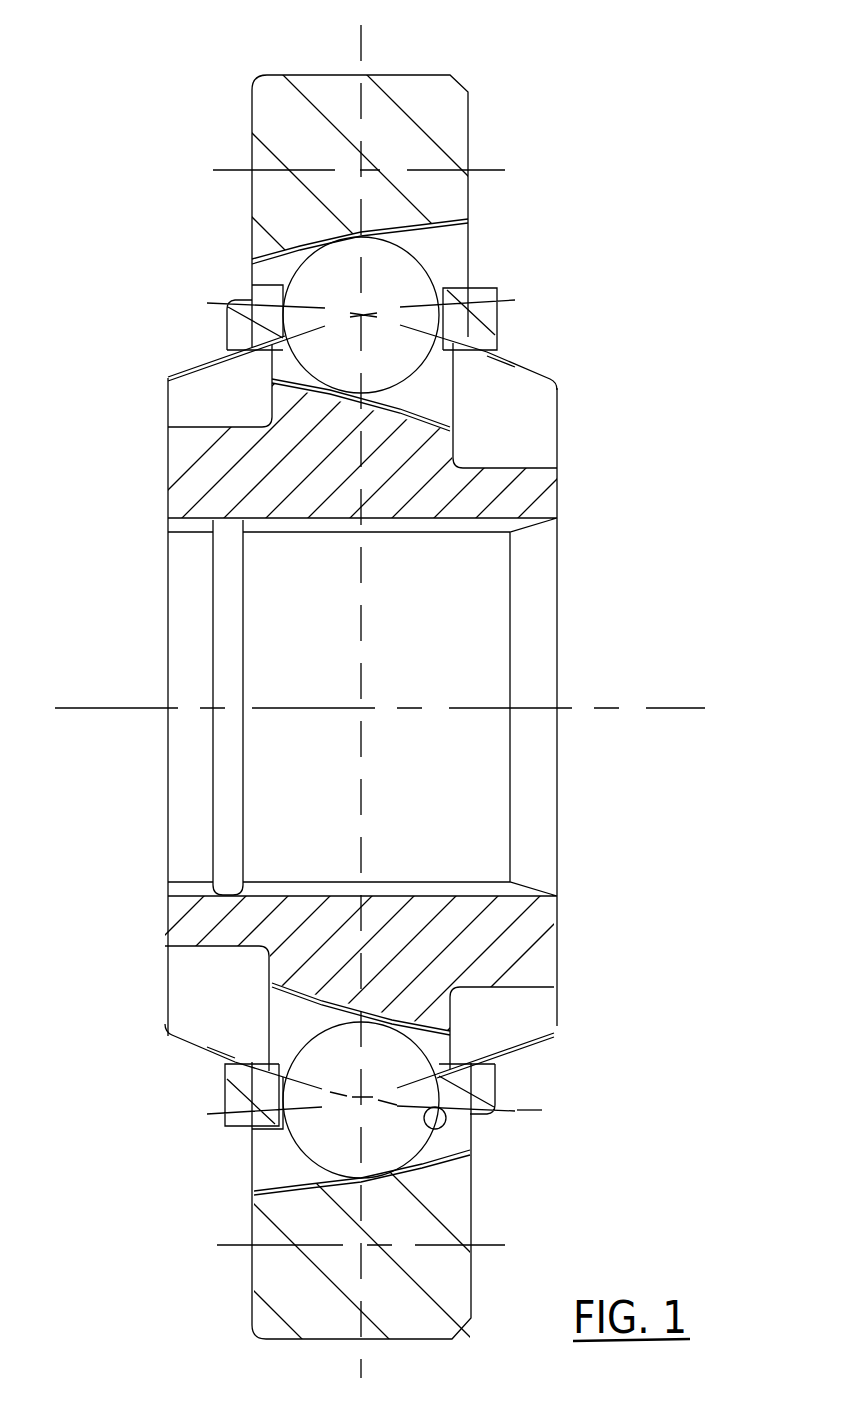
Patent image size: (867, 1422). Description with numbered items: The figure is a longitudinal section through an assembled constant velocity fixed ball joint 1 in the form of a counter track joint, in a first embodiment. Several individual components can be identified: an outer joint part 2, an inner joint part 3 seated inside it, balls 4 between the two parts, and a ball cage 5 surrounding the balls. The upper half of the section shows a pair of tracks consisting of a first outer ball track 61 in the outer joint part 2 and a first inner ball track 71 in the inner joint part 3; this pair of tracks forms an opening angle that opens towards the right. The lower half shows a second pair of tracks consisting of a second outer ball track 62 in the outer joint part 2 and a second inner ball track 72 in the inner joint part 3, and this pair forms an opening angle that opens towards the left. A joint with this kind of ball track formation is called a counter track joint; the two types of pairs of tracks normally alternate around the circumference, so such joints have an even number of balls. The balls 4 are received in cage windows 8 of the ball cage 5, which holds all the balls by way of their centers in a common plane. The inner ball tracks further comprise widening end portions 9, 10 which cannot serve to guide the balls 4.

The constant velocity fixed ball joint 1 is at (364, 690).
The outer joint part 2 is at (468, 127).
The inner joint part 3 is at (547, 498).
The balls 4 is at (415, 277).
The ball cage 5 is at (483, 1088).
The first outer ball track 61 is at (458, 234).
The second outer ball track 62 is at (268, 1168).
The first inner ball track 71 is at (437, 383).
The second inner ball track 72 is at (220, 1078).
The cage windows 8 is at (475, 1137).
The widening end portion 9 is at (548, 1010).
The widening end portion 10 is at (195, 1014).